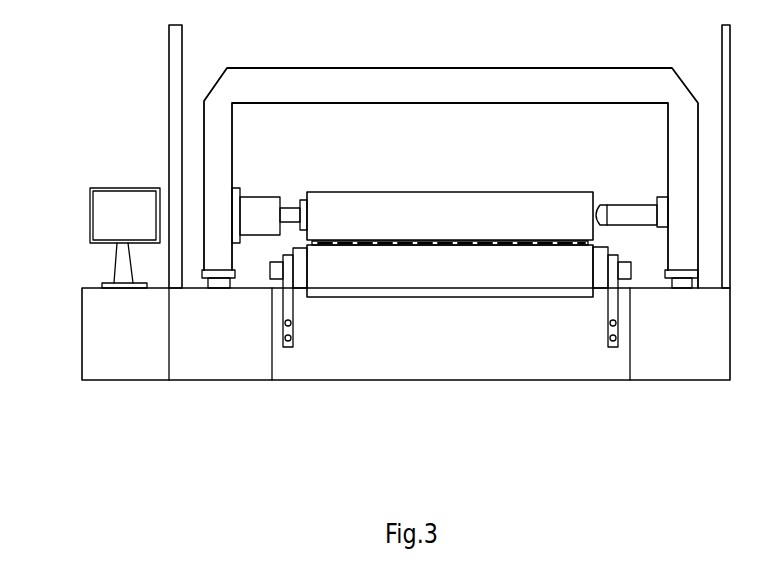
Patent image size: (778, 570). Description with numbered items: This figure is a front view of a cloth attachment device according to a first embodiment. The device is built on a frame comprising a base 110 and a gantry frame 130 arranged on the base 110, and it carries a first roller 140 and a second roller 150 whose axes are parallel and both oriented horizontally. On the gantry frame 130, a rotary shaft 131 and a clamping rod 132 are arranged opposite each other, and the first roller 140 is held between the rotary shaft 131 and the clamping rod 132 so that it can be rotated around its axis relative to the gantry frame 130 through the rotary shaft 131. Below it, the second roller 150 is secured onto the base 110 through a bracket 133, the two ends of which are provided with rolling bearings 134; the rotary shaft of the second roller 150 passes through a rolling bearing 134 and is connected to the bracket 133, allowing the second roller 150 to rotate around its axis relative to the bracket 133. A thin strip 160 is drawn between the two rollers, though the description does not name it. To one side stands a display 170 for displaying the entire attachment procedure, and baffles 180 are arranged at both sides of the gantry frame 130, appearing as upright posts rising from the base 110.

The base 110 is at (406, 359).
The gantry frame 130 is at (450, 162).
The rotary shaft 131 is at (298, 195).
The clamping rod 132 is at (613, 187).
The bracket 133 is at (655, 297).
The rolling bearing 134 is at (469, 291).
The first roller 140 is at (450, 191).
The second roller 150 is at (450, 292).
The material strip 160 is at (414, 247).
The display 170 is at (90, 216).
The baffle 180 is at (449, 202).